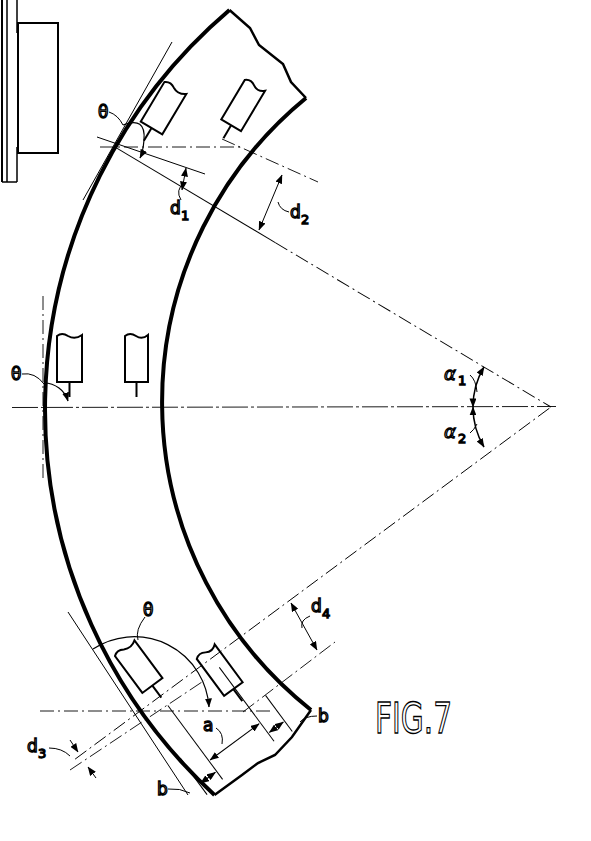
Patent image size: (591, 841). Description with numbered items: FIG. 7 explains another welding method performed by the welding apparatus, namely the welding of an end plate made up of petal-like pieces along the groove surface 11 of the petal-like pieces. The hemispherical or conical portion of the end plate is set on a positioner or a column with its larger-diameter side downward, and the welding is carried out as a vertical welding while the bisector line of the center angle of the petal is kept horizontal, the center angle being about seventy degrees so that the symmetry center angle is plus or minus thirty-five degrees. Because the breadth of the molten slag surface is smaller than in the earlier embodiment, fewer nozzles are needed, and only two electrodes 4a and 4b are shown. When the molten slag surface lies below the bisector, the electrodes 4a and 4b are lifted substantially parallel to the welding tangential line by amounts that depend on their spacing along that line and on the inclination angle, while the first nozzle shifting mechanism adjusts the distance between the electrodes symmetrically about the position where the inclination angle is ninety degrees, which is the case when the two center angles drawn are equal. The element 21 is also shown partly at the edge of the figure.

The housing part 21 is at (40, 33).
The groove surface of the petal-like pieces 11 is at (153, 449).
The electrode 4a is at (74, 343).
The electrode 4b is at (142, 343).